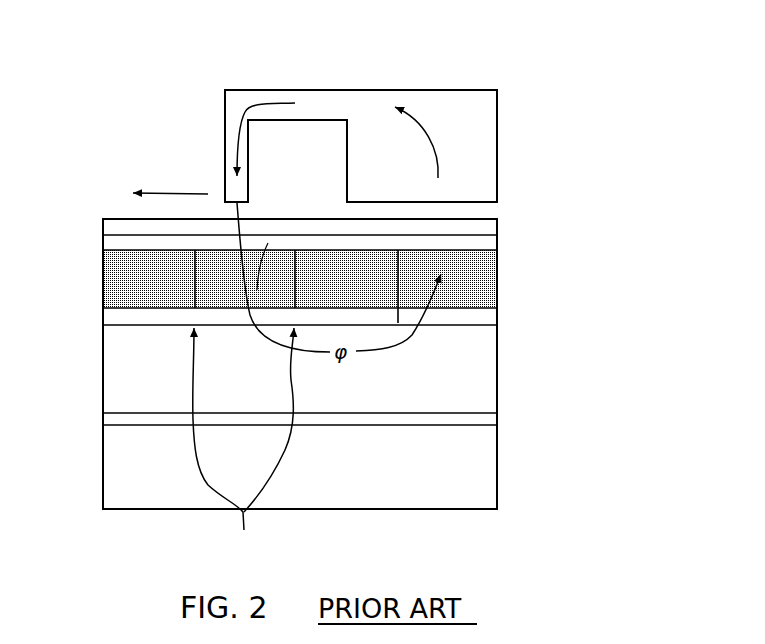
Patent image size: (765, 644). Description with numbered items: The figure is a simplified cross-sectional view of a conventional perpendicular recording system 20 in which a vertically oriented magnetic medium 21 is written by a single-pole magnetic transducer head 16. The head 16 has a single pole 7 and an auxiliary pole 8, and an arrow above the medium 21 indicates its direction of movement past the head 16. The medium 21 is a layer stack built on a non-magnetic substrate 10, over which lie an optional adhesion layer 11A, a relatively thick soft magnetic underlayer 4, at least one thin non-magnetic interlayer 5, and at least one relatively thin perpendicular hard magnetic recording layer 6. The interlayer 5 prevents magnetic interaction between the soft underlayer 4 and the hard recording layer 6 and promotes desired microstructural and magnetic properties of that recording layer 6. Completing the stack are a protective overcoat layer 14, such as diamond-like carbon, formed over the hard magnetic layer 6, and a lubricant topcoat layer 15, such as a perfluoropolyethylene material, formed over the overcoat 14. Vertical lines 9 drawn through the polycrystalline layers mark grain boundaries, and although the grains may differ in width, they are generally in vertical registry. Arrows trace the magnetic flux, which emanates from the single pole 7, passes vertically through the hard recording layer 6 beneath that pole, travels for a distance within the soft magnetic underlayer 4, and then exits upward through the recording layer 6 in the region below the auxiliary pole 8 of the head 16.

The perpendicular recording system 20 is at (498, 66).
The vertically oriented magnetic medium 21 is at (88, 244).
The single-pole magnetic transducer head 16 is at (278, 86).
The single pole 7 is at (184, 141).
The auxiliary pole 8 is at (508, 130).
The lubricant topcoat layer 15 is at (490, 228).
The protective overcoat layer 14 is at (490, 243).
The perpendicular hard magnetic recording layer 6 is at (490, 263).
The non-magnetic interlayer 5 is at (490, 318).
The soft magnetic underlayer 4 is at (490, 358).
The adhesion layer 11A is at (490, 418).
The non-magnetic substrate 10 is at (488, 458).
The grain boundaries 9 is at (243, 446).